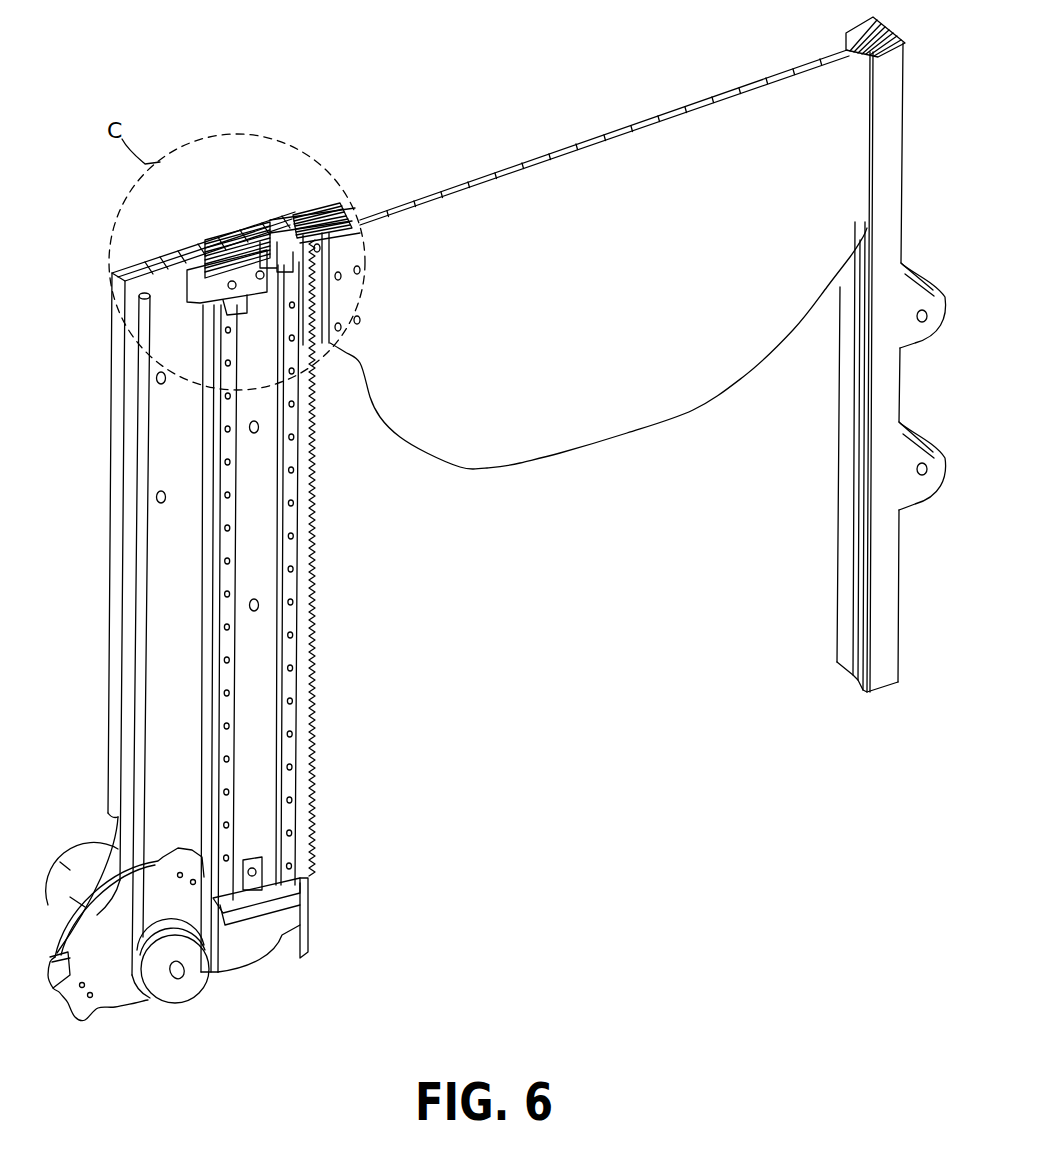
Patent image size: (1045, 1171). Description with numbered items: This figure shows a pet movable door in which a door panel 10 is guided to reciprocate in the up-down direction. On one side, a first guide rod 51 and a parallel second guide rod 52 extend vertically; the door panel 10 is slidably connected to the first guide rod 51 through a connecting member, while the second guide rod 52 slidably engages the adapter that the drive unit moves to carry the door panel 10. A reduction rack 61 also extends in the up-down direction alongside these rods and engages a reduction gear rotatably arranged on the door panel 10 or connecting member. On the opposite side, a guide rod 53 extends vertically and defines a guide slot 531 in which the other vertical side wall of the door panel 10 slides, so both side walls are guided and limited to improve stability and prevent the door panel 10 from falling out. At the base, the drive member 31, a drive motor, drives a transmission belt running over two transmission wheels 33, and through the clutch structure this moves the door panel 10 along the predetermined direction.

The door panel 10 is at (576, 192).
The drive member 31 is at (66, 868).
The transmission wheel 33 is at (176, 1003).
The first guide rod 51 is at (299, 588).
The second guide rod 52 is at (236, 642).
The guide rod 53 is at (852, 45).
The guide slot 531 is at (850, 480).
The reduction rack 61 is at (317, 541).